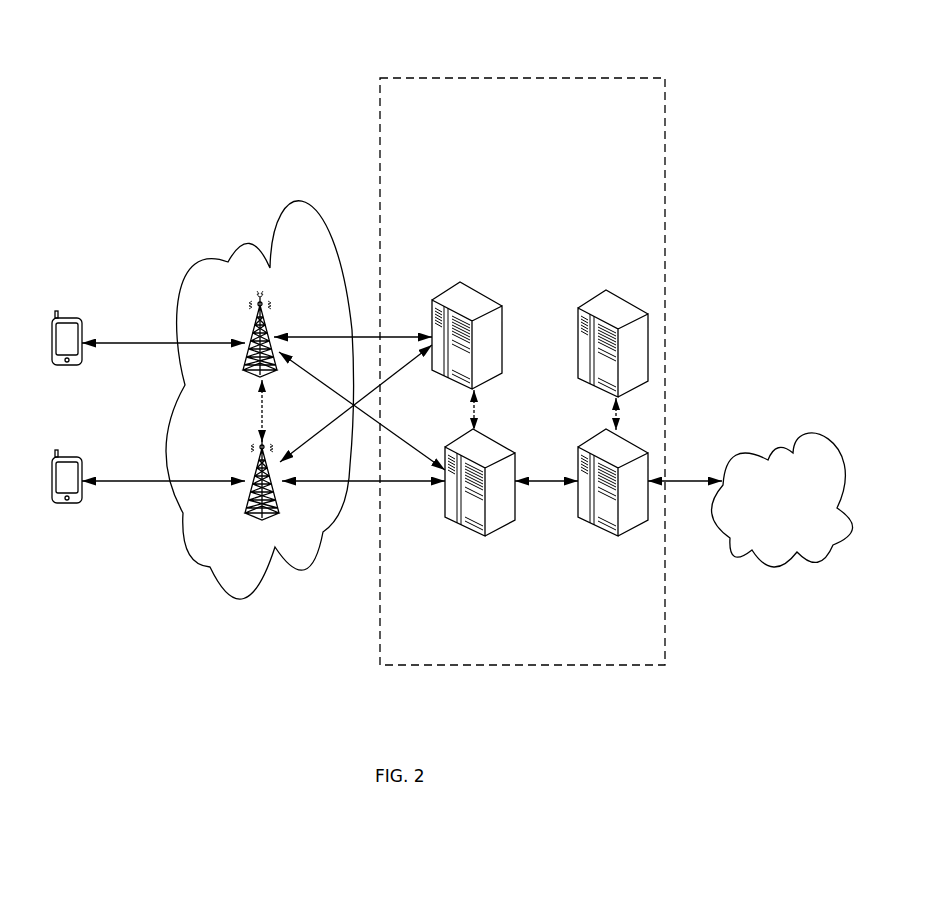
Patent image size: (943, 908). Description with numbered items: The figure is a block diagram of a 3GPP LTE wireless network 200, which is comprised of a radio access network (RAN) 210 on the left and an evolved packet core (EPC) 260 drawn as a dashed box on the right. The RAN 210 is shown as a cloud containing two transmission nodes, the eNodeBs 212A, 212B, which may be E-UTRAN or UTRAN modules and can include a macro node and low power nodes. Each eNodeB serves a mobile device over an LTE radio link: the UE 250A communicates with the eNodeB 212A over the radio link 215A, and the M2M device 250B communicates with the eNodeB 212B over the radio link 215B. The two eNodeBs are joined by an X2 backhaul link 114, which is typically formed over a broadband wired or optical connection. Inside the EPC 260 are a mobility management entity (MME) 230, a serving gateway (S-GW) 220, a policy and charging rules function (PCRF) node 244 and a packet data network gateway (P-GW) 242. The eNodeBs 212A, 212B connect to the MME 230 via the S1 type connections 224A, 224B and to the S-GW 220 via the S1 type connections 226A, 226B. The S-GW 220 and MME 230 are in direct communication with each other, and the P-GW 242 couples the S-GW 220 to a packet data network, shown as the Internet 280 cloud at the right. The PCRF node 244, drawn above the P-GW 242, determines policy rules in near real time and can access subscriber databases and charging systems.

The wireless network 200 is at (330, 34).
The evolved packet core 260 is at (522, 371).
The radio access network 210 is at (260, 400).
The eNodeB 212A is at (248, 325).
The eNodeB 212B is at (281, 503).
The X2 interface 114 is at (258, 412).
The user equipment 250A is at (56, 312).
The user equipment 250B is at (70, 504).
The LTE radio link 215A is at (126, 343).
The LTE radio link 215B is at (128, 481).
The S1 type connection 224A is at (408, 337).
The S1 type connection 224B is at (408, 357).
The S1 type connection 226A is at (350, 412).
The S1 type connection 226B is at (400, 482).
The mobility management entity 230 is at (436, 296).
The policy and charging rules function node 244 is at (612, 300).
The serving gateway 220 is at (482, 530).
The packet data network gateway 242 is at (604, 530).
The Internet 280 is at (782, 500).